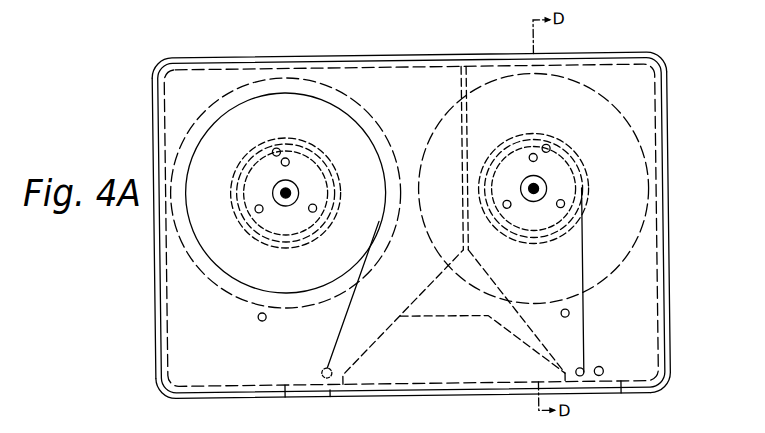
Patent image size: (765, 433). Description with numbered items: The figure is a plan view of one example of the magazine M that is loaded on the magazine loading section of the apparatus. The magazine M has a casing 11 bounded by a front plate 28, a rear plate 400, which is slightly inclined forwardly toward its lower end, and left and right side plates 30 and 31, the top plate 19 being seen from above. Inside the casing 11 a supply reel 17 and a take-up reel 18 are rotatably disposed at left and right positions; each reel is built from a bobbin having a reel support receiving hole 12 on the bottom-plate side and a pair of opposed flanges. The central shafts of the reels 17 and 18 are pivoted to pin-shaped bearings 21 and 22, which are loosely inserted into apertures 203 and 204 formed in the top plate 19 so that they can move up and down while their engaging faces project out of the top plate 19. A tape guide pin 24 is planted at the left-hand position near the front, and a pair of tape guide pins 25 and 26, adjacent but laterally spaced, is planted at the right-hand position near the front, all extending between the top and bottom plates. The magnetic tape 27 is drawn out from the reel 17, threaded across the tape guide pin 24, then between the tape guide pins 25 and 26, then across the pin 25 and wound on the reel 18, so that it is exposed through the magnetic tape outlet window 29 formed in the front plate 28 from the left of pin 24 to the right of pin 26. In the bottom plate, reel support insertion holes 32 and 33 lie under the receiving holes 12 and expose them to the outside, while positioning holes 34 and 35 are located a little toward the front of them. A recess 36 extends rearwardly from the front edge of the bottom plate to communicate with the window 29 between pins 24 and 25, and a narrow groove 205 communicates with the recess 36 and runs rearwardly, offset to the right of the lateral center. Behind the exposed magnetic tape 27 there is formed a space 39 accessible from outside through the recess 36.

The magazine M is at (203, 52).
The rear plate 400 is at (456, 56).
The casing 11 is at (388, 68).
The reel support receiving hole 12 is at (278, 146).
The supply reel 17 is at (368, 112).
The take-up reel 18 is at (450, 112).
The top plate 19 is at (206, 374).
The bearing 21 is at (295, 182).
The bearing 22 is at (525, 181).
The tape guide pin 24 is at (320, 371).
The tape guide pin 25 is at (575, 371).
The tape guide pin 26 is at (600, 370).
The magnetic tape 27 is at (353, 294).
The front plate 28 is at (247, 390).
The magnetic tape outlet window 29 is at (328, 396).
The left side plate 30 is at (154, 245).
The right side plate 31 is at (668, 263).
The reel support insertion hole 32 is at (316, 152).
The reel support insertion hole 33 is at (572, 158).
The positioning hole 34 is at (264, 318).
The positioning hole 35 is at (564, 320).
The recess 36 is at (437, 315).
The space 39 is at (452, 368).
The aperture 203 is at (286, 196).
The aperture 204 is at (534, 195).
The narrow groove 205 is at (468, 127).